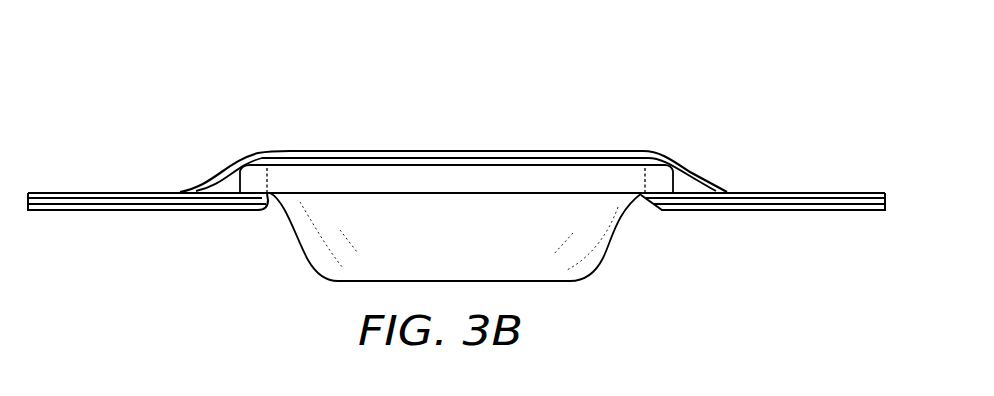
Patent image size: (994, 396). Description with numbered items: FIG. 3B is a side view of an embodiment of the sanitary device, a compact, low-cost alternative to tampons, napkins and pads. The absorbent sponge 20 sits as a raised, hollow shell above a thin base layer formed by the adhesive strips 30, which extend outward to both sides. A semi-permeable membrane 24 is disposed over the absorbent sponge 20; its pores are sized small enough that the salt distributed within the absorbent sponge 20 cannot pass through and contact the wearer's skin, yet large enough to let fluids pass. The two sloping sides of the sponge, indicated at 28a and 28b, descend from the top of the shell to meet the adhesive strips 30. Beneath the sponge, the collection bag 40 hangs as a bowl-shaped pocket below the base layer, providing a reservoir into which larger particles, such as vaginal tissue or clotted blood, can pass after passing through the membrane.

The absorbent sponge 20 is at (424, 100).
The semi-permeable membrane 24 is at (560, 152).
The first side wall of cover 28a is at (218, 138).
The second side wall of cover 28b is at (687, 126).
The adhesive strips 30 is at (793, 192).
The collection bag 40 is at (600, 268).